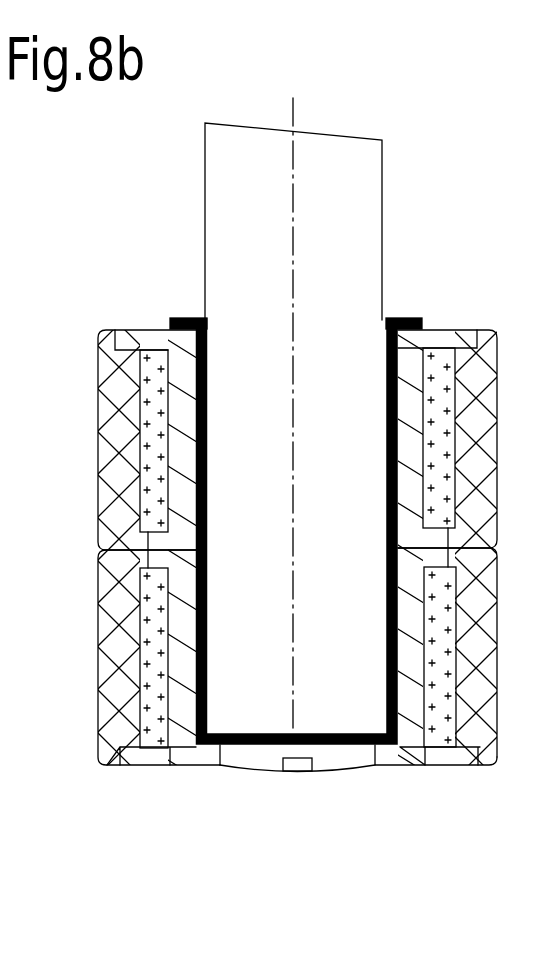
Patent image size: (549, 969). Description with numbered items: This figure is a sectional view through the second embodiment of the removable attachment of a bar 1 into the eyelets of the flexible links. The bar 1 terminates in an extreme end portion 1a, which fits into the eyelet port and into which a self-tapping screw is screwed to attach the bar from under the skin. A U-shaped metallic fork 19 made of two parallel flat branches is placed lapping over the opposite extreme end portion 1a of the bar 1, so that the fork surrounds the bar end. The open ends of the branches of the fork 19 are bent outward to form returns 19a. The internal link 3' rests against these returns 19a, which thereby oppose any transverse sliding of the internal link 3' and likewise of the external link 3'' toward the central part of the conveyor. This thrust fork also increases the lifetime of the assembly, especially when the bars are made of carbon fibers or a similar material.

The bar 1 is at (322, 175).
The end of the bar 1a is at (318, 378).
The returns 19a is at (182, 320).
The internal link 3' is at (471, 512).
The U-shaped metallic fork 19 is at (400, 510).
The external link 3'' is at (473, 671).